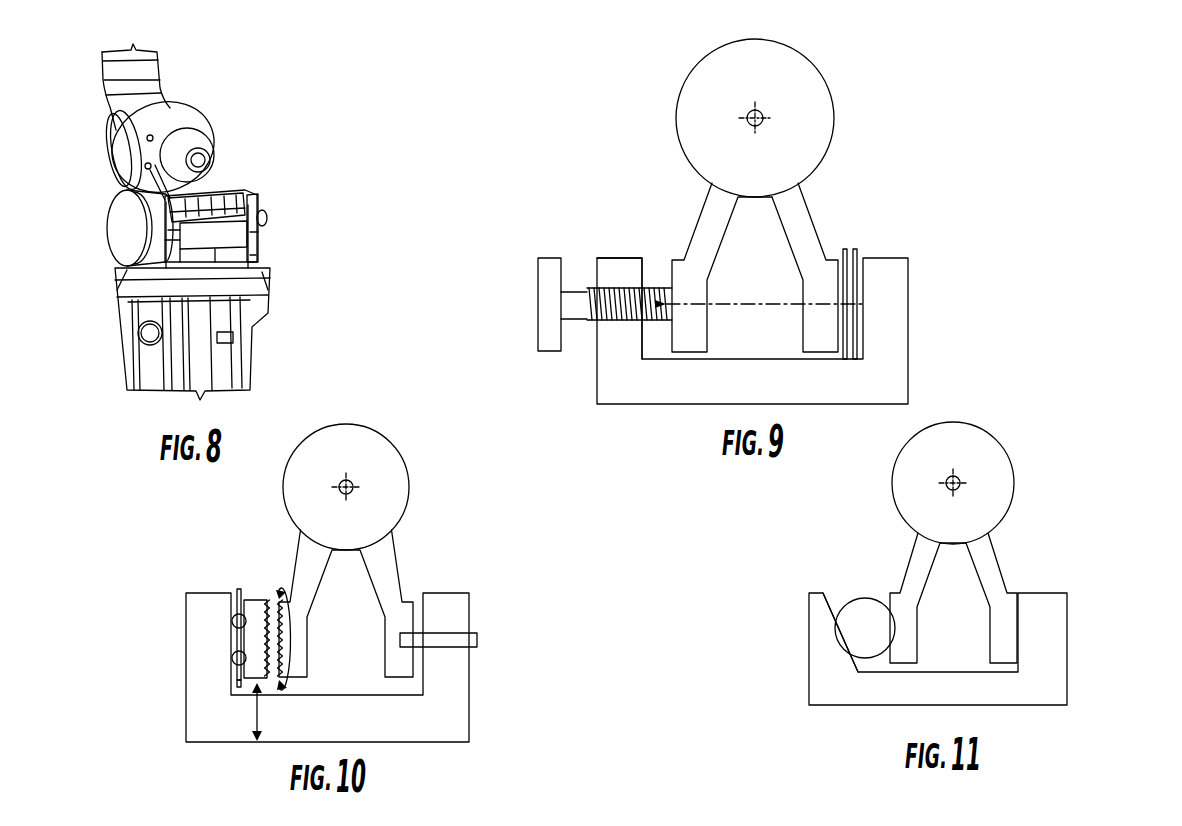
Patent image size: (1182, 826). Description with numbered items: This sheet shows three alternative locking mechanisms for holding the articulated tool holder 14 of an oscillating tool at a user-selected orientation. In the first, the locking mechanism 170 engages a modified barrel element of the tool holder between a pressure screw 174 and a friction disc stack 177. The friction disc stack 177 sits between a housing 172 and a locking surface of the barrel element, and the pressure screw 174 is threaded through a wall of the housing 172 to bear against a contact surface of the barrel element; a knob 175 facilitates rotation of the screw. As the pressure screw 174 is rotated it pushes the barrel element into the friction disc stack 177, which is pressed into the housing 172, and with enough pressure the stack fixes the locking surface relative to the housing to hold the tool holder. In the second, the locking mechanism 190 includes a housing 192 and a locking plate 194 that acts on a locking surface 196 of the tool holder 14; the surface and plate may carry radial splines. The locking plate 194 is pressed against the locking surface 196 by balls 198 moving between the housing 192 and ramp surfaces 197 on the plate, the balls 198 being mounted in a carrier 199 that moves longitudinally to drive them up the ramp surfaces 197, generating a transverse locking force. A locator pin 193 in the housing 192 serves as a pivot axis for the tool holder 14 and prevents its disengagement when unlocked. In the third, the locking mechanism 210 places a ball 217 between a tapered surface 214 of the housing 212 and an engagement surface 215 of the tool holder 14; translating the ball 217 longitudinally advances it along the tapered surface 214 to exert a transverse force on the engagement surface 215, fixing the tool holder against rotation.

In FIG. 10, the tool holder 14 is at (413, 457).
In FIG. 11, the tool holder 14 is at (968, 542).
In FIG. 8, the locking mechanism 170 is at (196, 203).
In FIG. 9, the locking mechanism 170 is at (746, 324).
In FIG. 8, the housing 172 is at (254, 232).
In FIG. 9, the housing 172 is at (883, 342).
In FIG. 9, the pressure screw 174 is at (618, 275).
In FIG. 8, the knob 175 is at (123, 228).
In FIG. 9, the knob 175 is at (548, 352).
In FIG. 9, the friction disc stack 177 is at (857, 250).
In FIG. 10, the locking mechanism 190 is at (329, 619).
In FIG. 10, the housing 192 is at (447, 690).
In FIG. 10, the locator pin 193 is at (478, 632).
In FIG. 10, the locking plate 194 is at (256, 612).
In FIG. 10, the locking surface 196 is at (278, 608).
In FIG. 10, the ramp surfaces 197 is at (238, 608).
In FIG. 10, the balls 198 is at (232, 621).
In FIG. 10, the carrier 199 is at (230, 678).
In FIG. 11, the locking mechanism 210 is at (962, 622).
In FIG. 11, the housing 212 is at (1057, 640).
In FIG. 11, the tapered surface 214 is at (830, 605).
In FIG. 11, the engagement surface 215 is at (890, 592).
In FIG. 11, the ball 217 is at (867, 635).